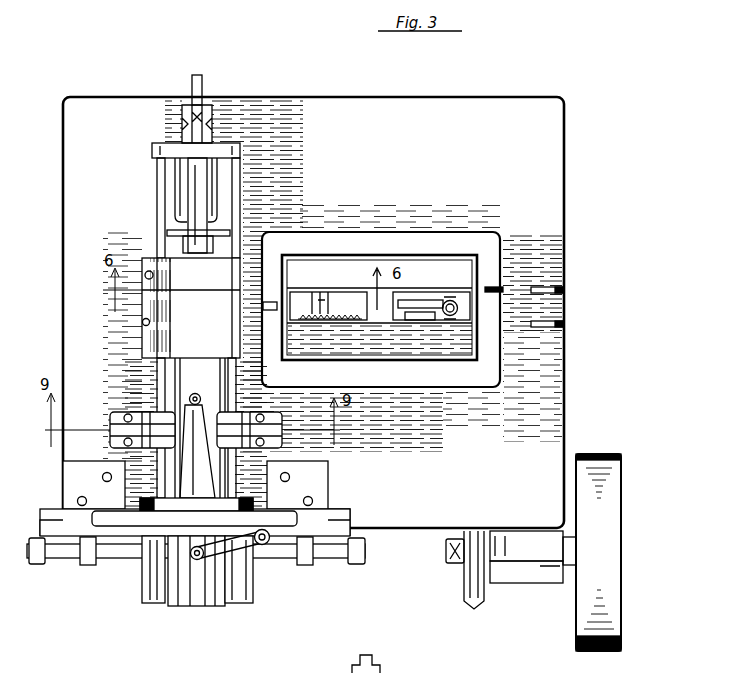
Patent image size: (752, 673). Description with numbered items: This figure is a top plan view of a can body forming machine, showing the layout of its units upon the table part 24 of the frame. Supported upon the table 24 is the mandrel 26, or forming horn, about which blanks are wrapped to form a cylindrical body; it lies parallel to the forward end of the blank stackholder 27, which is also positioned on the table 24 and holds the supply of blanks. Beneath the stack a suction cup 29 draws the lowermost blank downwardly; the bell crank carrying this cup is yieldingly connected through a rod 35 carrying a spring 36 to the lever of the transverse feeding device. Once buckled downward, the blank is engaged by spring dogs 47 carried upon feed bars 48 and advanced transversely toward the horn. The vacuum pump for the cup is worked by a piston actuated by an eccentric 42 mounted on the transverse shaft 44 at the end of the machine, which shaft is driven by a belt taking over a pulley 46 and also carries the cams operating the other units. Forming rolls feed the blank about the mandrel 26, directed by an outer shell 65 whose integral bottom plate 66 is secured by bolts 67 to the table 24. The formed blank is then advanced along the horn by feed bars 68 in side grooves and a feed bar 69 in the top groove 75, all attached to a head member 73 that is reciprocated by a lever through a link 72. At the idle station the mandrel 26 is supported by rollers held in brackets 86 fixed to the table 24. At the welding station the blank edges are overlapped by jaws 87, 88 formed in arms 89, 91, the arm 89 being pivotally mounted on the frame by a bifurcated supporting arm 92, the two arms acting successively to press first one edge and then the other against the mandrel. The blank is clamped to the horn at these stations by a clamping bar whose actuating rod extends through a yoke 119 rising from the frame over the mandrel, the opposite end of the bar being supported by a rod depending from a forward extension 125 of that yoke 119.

The table part 24 is at (494, 110).
The mandrel 26 is at (172, 385).
The blank stackholder 27 is at (437, 256).
The suction cup 29 is at (450, 300).
The rod 35 is at (312, 316).
The spring 36 is at (348, 314).
The eccentric 42 is at (470, 604).
The transverse shaft 44 is at (455, 548).
The pulley 46 is at (607, 482).
The spring dogs 47 is at (500, 288).
The feed bars 48 is at (560, 322).
The outer shell 65 is at (222, 270).
The bottom plate 66 is at (142, 323).
The bolts 67 is at (147, 271).
The feed bars 68 is at (200, 190).
The feed bar 69 is at (215, 165).
The link 72 is at (207, 106).
The head member 73 is at (216, 150).
The top groove 75 is at (192, 604).
The brackets 86 is at (245, 413).
The jaw 87 is at (240, 594).
The jaw 88 is at (156, 590).
The arm 89 is at (328, 560).
The arm 91 is at (114, 560).
The bifurcated supporting arm 92 is at (356, 562).
The yoke 119 is at (235, 518).
The forward extension 125 is at (232, 469).